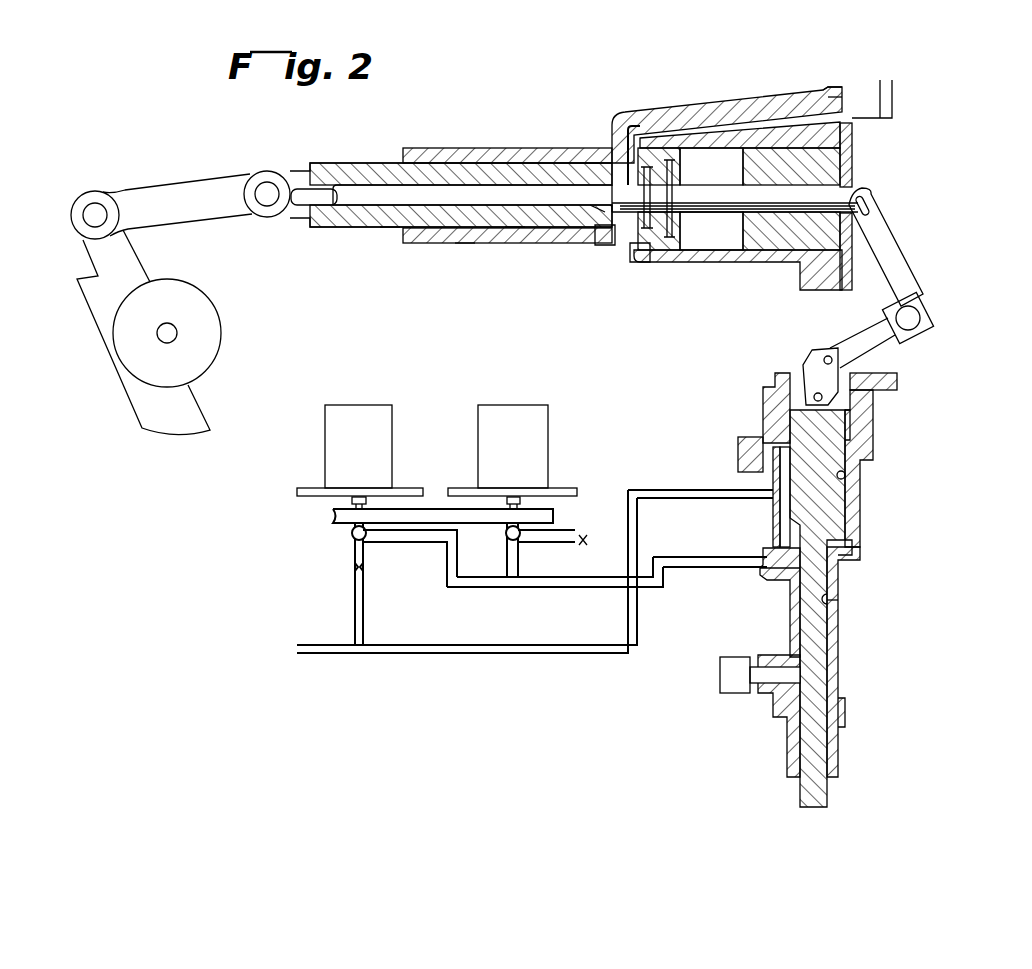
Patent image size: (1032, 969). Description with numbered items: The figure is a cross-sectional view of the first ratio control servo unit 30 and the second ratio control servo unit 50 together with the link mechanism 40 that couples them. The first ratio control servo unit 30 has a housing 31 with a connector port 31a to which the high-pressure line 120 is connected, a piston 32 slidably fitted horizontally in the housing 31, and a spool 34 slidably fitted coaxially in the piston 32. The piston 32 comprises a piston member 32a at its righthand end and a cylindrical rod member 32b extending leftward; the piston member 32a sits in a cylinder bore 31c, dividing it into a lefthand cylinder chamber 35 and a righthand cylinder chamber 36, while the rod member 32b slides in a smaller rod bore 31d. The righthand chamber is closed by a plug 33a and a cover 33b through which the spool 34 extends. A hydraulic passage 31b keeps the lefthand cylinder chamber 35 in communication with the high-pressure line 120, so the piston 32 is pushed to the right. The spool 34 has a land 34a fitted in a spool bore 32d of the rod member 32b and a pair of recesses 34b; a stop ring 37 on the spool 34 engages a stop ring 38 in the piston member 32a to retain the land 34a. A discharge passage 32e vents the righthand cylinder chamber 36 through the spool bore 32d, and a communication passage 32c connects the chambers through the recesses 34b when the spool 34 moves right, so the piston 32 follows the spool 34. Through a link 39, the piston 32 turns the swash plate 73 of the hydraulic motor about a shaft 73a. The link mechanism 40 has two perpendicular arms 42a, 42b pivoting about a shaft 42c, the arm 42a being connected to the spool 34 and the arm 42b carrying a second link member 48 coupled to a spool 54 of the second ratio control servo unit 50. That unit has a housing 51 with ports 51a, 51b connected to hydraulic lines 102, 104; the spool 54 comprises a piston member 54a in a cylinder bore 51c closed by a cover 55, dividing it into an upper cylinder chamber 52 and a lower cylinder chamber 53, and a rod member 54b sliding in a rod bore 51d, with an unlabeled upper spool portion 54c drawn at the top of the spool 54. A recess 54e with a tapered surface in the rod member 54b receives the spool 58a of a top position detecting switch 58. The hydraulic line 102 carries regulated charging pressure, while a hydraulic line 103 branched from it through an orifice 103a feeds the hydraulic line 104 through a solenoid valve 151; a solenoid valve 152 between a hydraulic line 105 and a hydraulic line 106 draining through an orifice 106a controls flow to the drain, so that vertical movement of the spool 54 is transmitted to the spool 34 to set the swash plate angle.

The first ratio control servo unit 30 is at (570, 80).
The housing 31 is at (470, 148).
The connector port 31a is at (832, 96).
The hydraulic passage 31b is at (722, 130).
The cylinder bore 31c is at (735, 262).
The rod bore 31d is at (466, 244).
The piston 32 is at (347, 163).
The piston member 32a is at (640, 257).
The cylindrical rod member 32b is at (388, 228).
The communication passage 32c is at (589, 155).
The spool bore 32d is at (514, 228).
The discharge passage 32e is at (597, 212).
The plug 33a is at (855, 172).
The cover 33b is at (855, 145).
The spool 34 is at (692, 250).
The land 34a is at (590, 200).
The recesses 34b is at (612, 150).
The lefthand cylinder chamber 35 is at (598, 250).
The righthand cylinder chamber 36 is at (739, 199).
The stop ring 37 is at (655, 245).
The stop ring 38 is at (690, 240).
The link 39 is at (178, 186).
The link mechanism 40 is at (947, 284).
The arm 42a is at (890, 250).
The arm 42b is at (878, 352).
The shaft 42c is at (884, 322).
The second link member 48 is at (812, 352).
The second ratio control servo unit 50 is at (900, 570).
The housing 51 is at (872, 522).
The port 51a is at (740, 478).
The port 51b is at (762, 575).
The cylinder bore 51c is at (853, 468).
The rod bore 51d is at (838, 600).
The upper cylinder chamber 52 is at (775, 510).
The lower cylinder chamber 53 is at (768, 550).
The spool 54 is at (830, 503).
The piston member 54a is at (858, 553).
The rod member 54b is at (835, 630).
The spool upper land 54c is at (850, 418).
The recess 54e is at (845, 697).
The cover 55 is at (763, 392).
The top position detecting switch 58 is at (732, 685).
The spool 58a is at (763, 698).
The swash plate 73 is at (188, 432).
The shaft 73a is at (177, 333).
The hydraulic line 102 is at (500, 657).
The hydraulic line 103 is at (354, 608).
The branch joint 103a is at (364, 570).
The hydraulic line 104 is at (545, 589).
The hydraulic line 105 is at (512, 560).
The hydraulic line 106 is at (577, 538).
The orifice 106a is at (565, 546).
The high-pressure line 120 is at (884, 95).
The solenoid valve 151 is at (388, 403).
The solenoid valve 152 is at (540, 403).